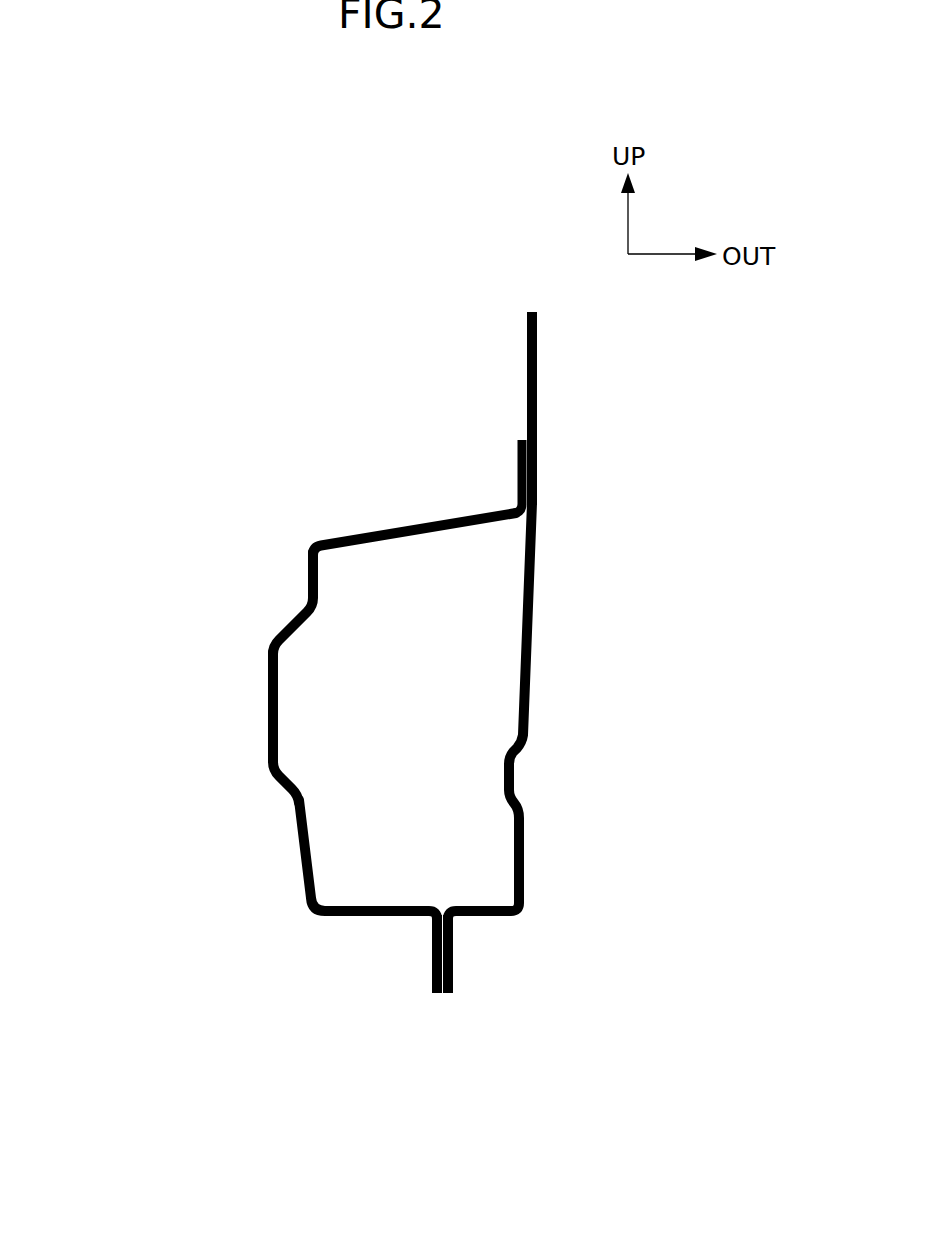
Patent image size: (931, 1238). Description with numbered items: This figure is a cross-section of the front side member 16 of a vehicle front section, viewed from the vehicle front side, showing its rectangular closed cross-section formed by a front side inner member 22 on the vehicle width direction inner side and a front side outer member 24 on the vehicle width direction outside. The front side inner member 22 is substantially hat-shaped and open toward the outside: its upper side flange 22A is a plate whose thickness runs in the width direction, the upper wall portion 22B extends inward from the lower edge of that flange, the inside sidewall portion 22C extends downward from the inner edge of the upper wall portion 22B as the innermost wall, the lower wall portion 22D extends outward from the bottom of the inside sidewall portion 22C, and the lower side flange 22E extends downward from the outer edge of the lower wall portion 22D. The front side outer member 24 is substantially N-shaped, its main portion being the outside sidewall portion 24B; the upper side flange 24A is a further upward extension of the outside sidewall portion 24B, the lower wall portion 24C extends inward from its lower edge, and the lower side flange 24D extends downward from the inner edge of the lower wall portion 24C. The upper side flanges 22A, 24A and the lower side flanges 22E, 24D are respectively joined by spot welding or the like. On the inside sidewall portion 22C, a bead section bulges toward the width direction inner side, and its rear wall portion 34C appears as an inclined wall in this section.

The front side member 16 is at (389, 355).
The front side inner member 22 is at (336, 537).
The upper side flange 22A is at (517, 452).
The upper wall portion 22B is at (435, 517).
The inside sidewall portion 22C is at (304, 579).
The lower wall portion 22D is at (367, 917).
The lower side flange 22E is at (432, 965).
The front side outer member 24 is at (550, 570).
The upper side flange 24A is at (537, 378).
The outside sidewall portion 24B is at (528, 662).
The lower wall portion 24C is at (483, 917).
The lower side flange 24D is at (452, 963).
The rear wall portion 34C is at (264, 699).